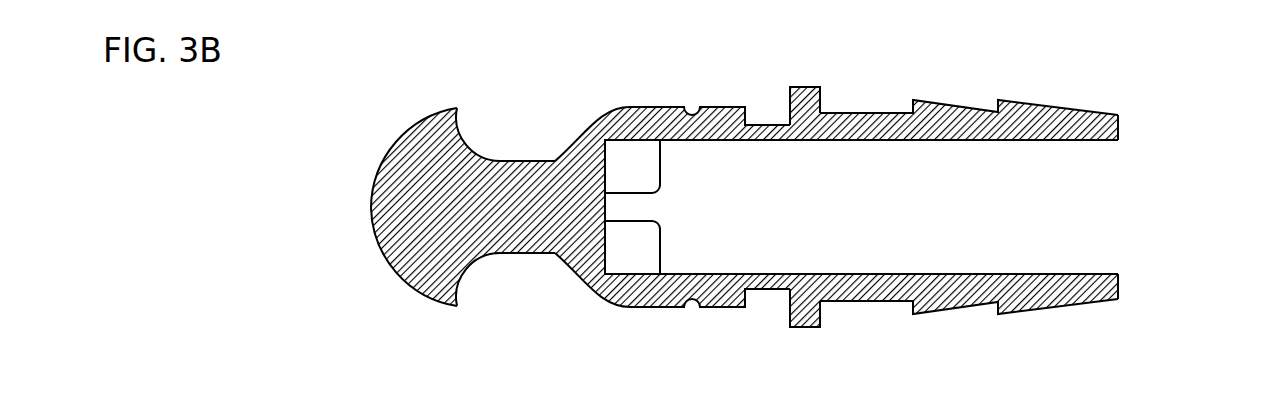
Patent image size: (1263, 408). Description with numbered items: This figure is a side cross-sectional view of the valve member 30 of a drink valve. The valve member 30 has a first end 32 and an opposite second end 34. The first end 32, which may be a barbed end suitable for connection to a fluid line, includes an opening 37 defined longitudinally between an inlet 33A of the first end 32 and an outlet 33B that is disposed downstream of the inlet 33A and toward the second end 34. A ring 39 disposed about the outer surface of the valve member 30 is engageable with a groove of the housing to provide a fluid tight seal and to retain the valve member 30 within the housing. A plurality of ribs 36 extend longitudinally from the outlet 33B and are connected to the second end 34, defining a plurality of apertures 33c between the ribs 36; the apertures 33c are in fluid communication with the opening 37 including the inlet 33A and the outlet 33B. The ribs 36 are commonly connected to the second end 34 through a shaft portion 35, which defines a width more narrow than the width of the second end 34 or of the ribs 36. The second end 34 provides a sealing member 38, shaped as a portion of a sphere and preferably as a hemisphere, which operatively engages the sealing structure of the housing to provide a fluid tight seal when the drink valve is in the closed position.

The valve member 30 is at (758, 90).
The first end 32 is at (1120, 150).
The inlet 33A is at (1120, 250).
The outlet 33B is at (657, 253).
The apertures 33c is at (644, 157).
The second end 34 is at (388, 147).
The shaft portion 35 is at (522, 230).
The ribs 36 is at (604, 117).
The opening 37 is at (963, 167).
The sealing member 38 is at (402, 283).
The ring 39 is at (807, 330).